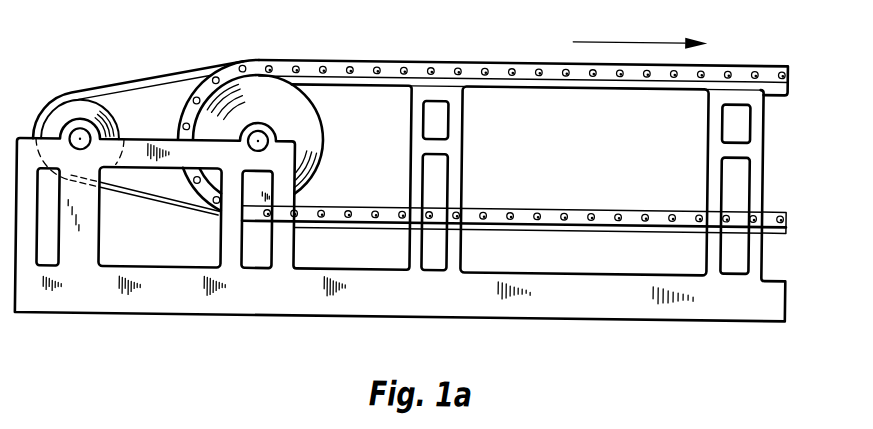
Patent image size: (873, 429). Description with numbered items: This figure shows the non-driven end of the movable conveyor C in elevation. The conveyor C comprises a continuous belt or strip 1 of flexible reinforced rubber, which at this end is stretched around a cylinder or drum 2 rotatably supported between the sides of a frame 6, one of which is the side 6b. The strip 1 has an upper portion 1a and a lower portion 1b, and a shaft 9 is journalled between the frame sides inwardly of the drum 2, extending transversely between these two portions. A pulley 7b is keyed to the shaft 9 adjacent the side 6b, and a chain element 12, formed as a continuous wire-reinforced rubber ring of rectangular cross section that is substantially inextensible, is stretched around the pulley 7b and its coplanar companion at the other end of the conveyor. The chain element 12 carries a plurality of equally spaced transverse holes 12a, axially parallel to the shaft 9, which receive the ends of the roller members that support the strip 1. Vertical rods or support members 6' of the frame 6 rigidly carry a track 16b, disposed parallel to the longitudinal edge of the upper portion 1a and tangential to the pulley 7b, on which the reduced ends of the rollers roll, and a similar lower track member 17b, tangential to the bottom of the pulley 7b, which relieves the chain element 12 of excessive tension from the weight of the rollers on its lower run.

The continuous belt or strip 1 is at (157, 75).
The upper portion of the strip 1a is at (530, 58).
The lower portion of the strip 1b is at (215, 210).
The cylinder or drum 2 is at (70, 112).
The frame 6 is at (400, 218).
The side of the frame 6b is at (81, 251).
The vertical rods or support members 6' is at (585, 187).
The pulley 7b is at (302, 167).
The shaft 9 is at (268, 134).
The chain element 12 is at (483, 142).
The holes 12a is at (457, 62).
The track 16b is at (672, 81).
The track member 17b is at (569, 221).
The movable conveyor C is at (586, 82).